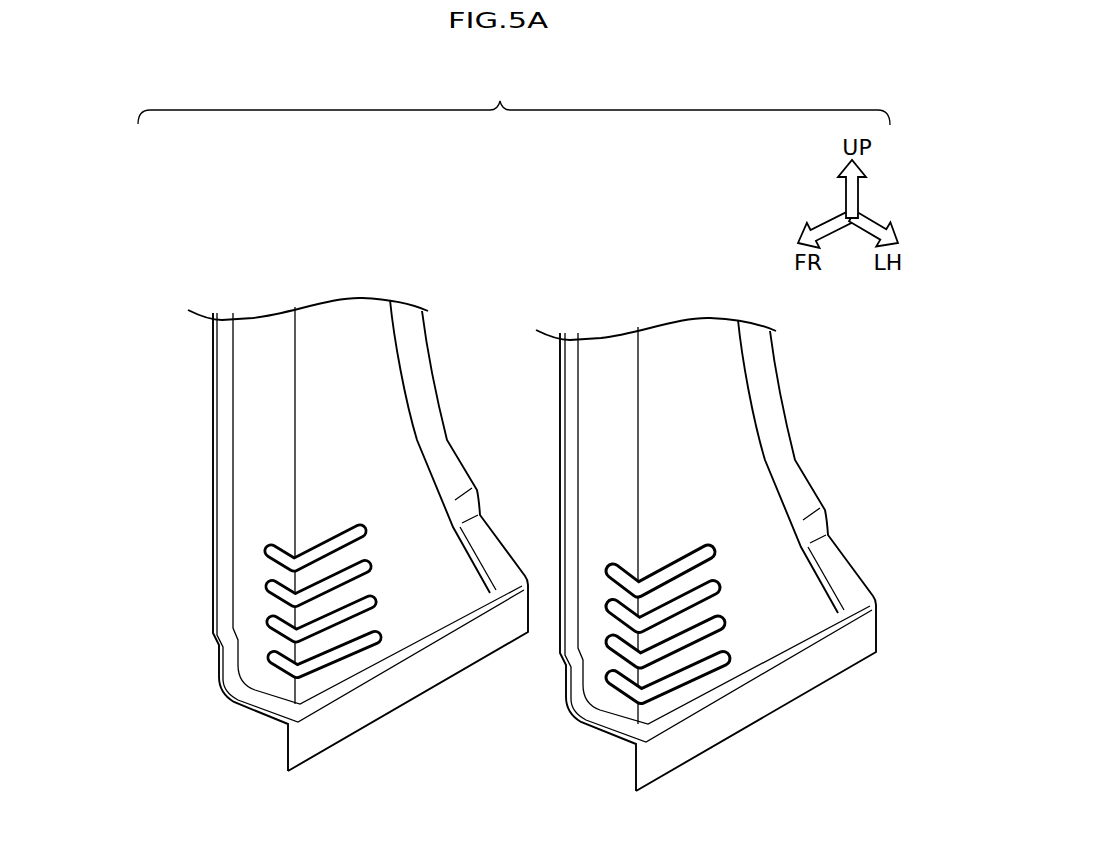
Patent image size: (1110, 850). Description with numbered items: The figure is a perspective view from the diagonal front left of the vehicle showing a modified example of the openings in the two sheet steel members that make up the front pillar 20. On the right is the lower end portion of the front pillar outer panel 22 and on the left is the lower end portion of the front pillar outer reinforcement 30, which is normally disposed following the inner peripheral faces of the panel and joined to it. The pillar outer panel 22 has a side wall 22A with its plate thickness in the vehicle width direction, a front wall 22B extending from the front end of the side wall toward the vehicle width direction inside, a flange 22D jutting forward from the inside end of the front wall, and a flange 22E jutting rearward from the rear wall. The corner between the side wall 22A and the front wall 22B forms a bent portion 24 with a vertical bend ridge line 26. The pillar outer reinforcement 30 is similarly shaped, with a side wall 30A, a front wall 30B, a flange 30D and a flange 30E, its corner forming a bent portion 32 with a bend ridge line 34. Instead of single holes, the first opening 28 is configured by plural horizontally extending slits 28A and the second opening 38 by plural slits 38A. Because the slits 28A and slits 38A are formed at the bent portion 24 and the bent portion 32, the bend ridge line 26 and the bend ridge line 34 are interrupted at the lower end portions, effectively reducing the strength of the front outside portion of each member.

The front pillar 20 is at (525, 521).
The front pillar outer panel 22 is at (712, 533).
The side wall 22A is at (730, 414).
The front wall 22B is at (605, 356).
The flange 22D is at (574, 376).
The flange 22E is at (788, 458).
The bent portion 24 is at (692, 525).
The bend ridge line 26 is at (639, 497).
The first opening 28 is at (776, 573).
The slits 28A is at (753, 577).
The front pillar outer reinforcement 30 is at (320, 521).
The side wall 30A is at (342, 326).
The front wall 30B is at (262, 338).
The flange 30D is at (222, 376).
The flange 30E is at (414, 331).
The bent portion 32 is at (351, 505).
The bend ridge line 34 is at (296, 437).
The second opening 38 is at (243, 639).
The slits 38A is at (250, 624).